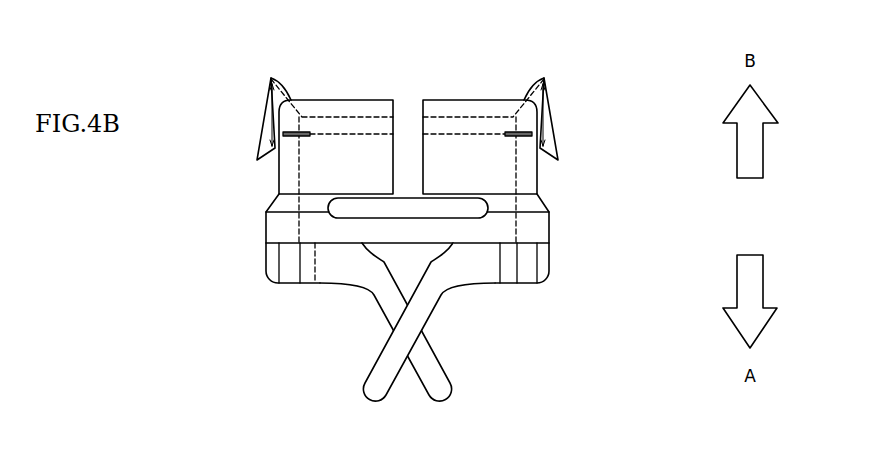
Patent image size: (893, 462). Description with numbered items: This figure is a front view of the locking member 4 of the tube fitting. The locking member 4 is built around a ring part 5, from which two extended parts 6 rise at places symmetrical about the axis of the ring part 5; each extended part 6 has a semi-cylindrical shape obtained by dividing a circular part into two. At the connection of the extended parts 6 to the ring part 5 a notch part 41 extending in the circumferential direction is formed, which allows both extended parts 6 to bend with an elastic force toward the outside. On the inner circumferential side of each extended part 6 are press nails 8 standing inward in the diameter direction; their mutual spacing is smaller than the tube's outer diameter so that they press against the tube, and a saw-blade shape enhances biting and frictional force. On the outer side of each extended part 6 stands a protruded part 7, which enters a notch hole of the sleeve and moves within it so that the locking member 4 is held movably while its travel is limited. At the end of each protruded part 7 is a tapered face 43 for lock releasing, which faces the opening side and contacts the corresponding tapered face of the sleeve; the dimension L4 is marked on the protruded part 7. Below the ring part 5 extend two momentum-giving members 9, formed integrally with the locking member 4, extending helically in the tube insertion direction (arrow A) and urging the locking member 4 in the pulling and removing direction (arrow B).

The locking member 4 is at (600, 61).
The ring part 5 is at (510, 231).
The extended part 6 is at (369, 127).
The protruded part 7 is at (252, 114).
The press nail 8 is at (309, 133).
The momentum-giving member 9 is at (357, 283).
The notch part 41 is at (356, 203).
The tapered face for lock releasing 43 is at (287, 81).
The length L4 is at (270, 127).